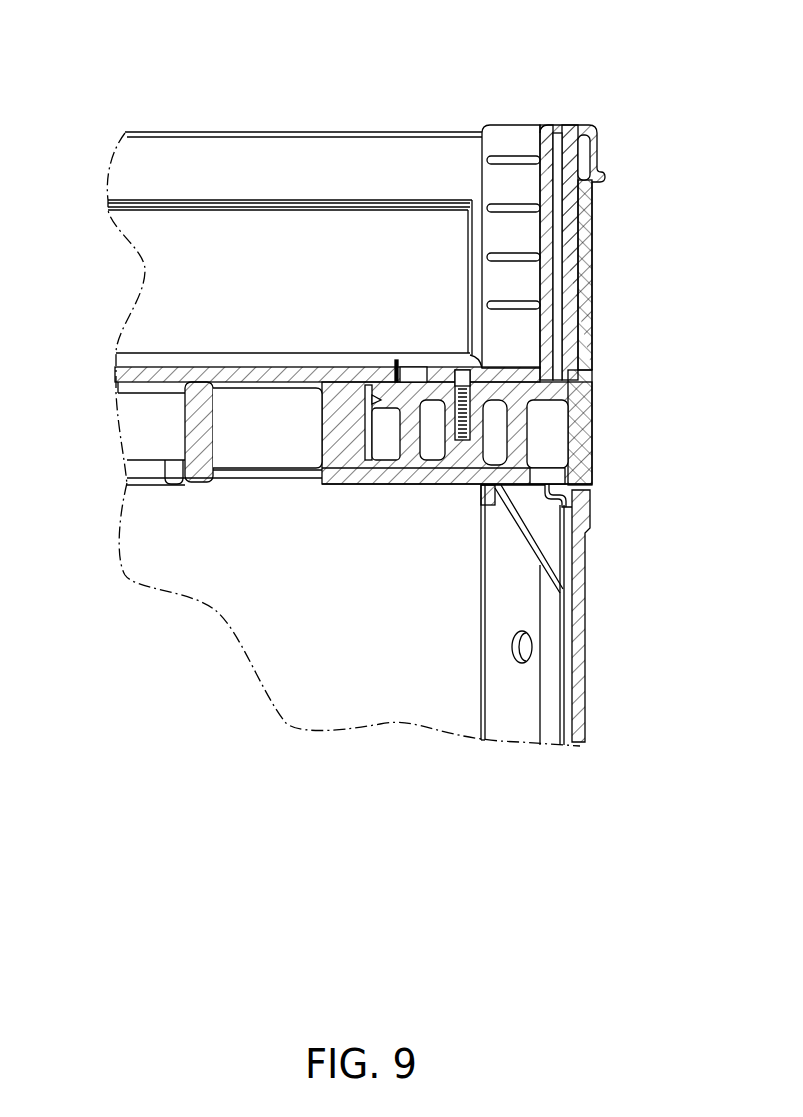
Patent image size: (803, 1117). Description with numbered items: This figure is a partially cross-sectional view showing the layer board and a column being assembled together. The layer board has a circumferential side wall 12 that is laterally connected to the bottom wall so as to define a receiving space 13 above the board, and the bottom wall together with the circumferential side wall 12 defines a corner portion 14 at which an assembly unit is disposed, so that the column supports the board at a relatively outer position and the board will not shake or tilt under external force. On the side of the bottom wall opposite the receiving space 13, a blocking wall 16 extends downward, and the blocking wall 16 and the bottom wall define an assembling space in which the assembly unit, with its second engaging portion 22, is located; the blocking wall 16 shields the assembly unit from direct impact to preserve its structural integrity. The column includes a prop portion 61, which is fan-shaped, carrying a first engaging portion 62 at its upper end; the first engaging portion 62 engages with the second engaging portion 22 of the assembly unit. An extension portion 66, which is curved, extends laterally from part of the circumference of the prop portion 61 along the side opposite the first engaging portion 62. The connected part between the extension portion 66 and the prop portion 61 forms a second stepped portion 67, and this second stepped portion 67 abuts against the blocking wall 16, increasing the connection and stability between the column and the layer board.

The circumferential side wall 12 is at (578, 302).
The receiving space 13 is at (332, 240).
The corner portion 14 is at (385, 476).
The blocking wall 16 is at (578, 425).
The second engaging portion 22 is at (430, 437).
The prop portion 61 is at (412, 473).
The first engaging portion 62 is at (468, 470).
The extension portion 66 is at (583, 663).
The second stepped portion 67 is at (583, 490).